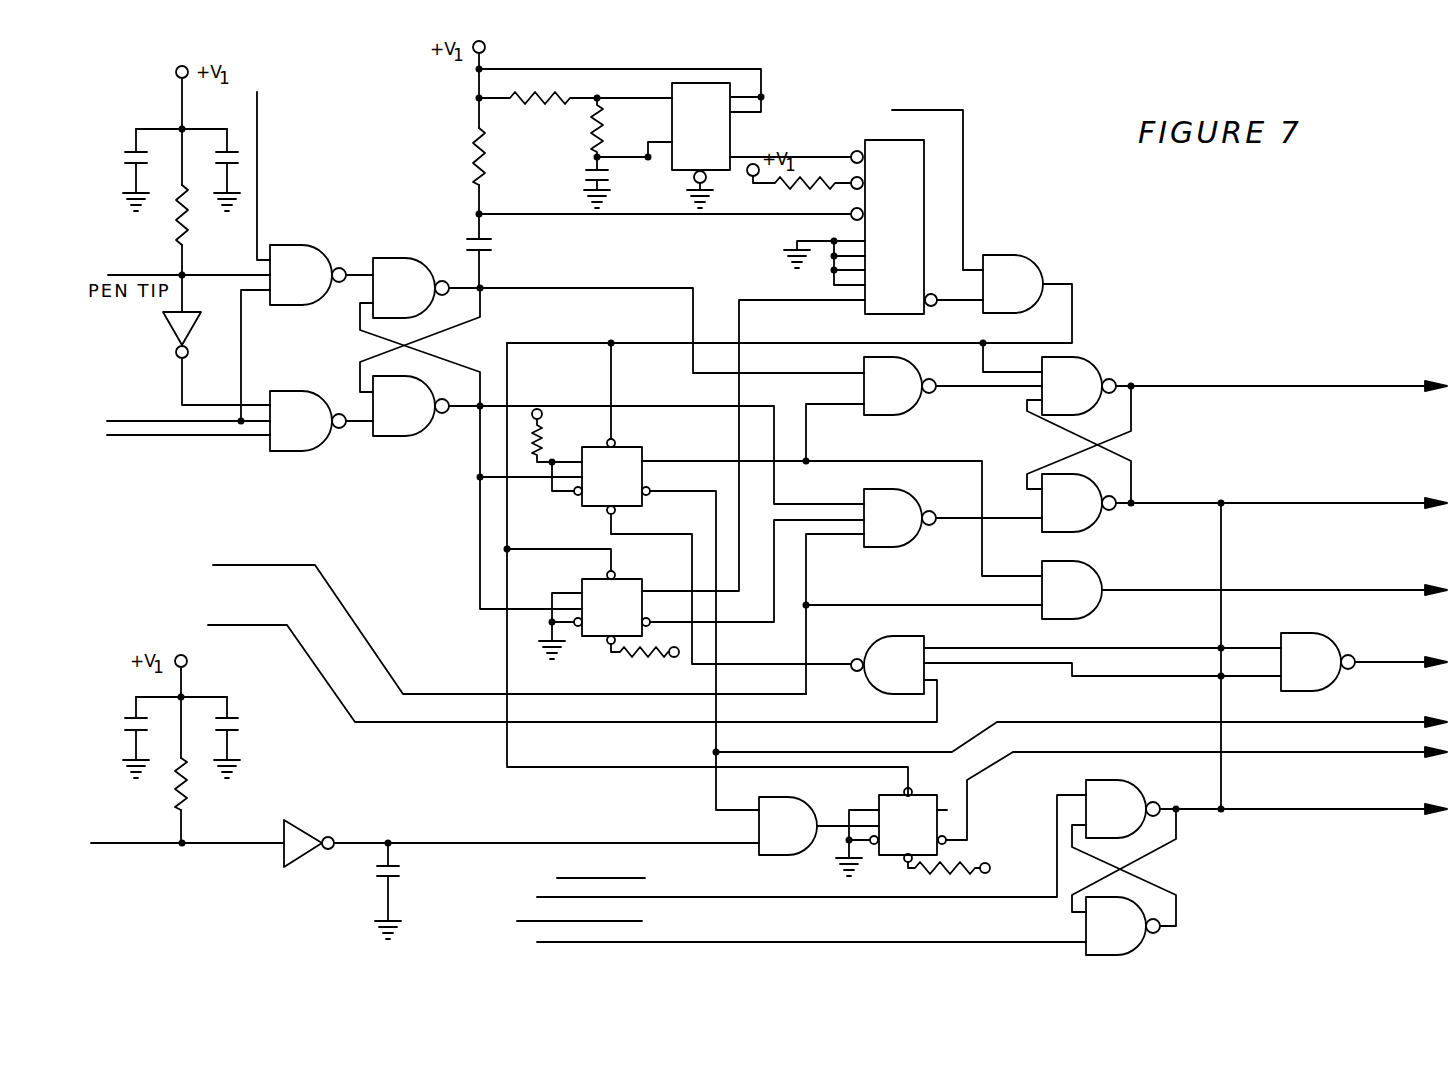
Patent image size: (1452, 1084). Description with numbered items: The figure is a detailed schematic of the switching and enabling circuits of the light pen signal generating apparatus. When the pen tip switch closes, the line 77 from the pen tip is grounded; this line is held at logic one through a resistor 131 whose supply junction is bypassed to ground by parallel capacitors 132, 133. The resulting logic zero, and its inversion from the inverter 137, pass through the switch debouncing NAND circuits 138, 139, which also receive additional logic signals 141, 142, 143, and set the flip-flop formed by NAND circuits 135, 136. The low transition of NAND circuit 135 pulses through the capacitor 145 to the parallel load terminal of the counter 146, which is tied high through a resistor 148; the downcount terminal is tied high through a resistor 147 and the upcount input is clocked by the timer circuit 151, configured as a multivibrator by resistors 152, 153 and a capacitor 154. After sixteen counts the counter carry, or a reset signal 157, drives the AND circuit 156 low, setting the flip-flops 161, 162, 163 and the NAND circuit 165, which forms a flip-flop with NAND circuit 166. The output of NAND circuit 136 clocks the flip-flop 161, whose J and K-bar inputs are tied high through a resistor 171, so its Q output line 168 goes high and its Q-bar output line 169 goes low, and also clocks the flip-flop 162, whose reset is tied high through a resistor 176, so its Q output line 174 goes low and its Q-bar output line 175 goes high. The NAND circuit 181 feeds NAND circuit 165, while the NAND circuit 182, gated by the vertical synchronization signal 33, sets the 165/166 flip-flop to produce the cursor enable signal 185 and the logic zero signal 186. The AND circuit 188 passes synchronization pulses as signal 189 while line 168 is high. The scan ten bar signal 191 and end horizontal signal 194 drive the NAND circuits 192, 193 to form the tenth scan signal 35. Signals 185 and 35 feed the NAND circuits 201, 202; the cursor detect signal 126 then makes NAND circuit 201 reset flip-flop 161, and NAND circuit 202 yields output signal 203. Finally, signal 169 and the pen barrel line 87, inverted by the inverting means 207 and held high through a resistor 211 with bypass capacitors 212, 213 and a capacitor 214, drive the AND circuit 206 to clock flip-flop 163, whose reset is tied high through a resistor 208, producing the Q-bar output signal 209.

The vertical synchronization signal 33 is at (327, 580).
The tenth scan signal 35 is at (1300, 812).
The line from the pen tip 77 is at (122, 273).
The pen barrel line 87 is at (120, 843).
The cursor detect signal 126 is at (300, 648).
The resistor 131 is at (175, 236).
The capacitor 132 is at (134, 146).
The capacitor 133 is at (230, 146).
The NAND circuit 135 is at (412, 300).
The NAND circuit 136 is at (412, 418).
The inverter 137 is at (164, 330).
The switch debouncing NAND circuit 138 is at (309, 287).
The switch debouncing NAND circuit 139 is at (309, 433).
The logic signal 141 is at (159, 441).
The logic signal 142 is at (127, 420).
The logic signal 143 is at (257, 140).
The capacitor 145 is at (496, 245).
The counter 146 is at (874, 142).
The resistor 147 is at (797, 194).
The resistor 148 is at (471, 156).
The timer circuit 151 is at (732, 142).
The resistor 152 is at (530, 112).
The resistor 153 is at (603, 135).
The capacitor 154 is at (586, 180).
The AND circuit 156 is at (1022, 296).
The reset signal 157 is at (963, 140).
The flip-flop 161 is at (629, 488).
The flip-flop 162 is at (629, 618).
The flip-flop 163 is at (925, 836).
The NAND circuit 165 is at (1080, 398).
The NAND circuit 166 is at (1080, 515).
The Q output line 168 is at (680, 461).
The Q-bar output line 169 is at (700, 500).
The resistor 171 is at (545, 448).
The Q output line 174 is at (680, 590).
The Q-bar output line 175 is at (730, 622).
The resistor 176 is at (630, 656).
The NAND circuit 181 is at (902, 398).
The NAND circuit 182 is at (902, 530).
The cursor enable signal 185 is at (1258, 500).
The logic 0 signal 186 is at (1250, 383).
The AND circuit 188 is at (1080, 602).
The vertical synchronization output signal 189 is at (1380, 590).
The scan 10 bar signal 191 is at (700, 898).
The NAND circuit 192 is at (1124, 821).
The NAND circuit 193 is at (1124, 938).
The end horizontal signal 194 is at (702, 942).
The NAND circuit 201 is at (908, 677).
The NAND circuit 202 is at (1319, 674).
The output signal 203 is at (1395, 660).
The AND circuit 206 is at (796, 838).
The inverting means 207 is at (310, 828).
The resistor 208 is at (972, 862).
The Q-bar output signal 209 is at (1280, 752).
The resistor 211 is at (188, 808).
The capacitor 212 is at (123, 724).
The capacitor 213 is at (235, 724).
The capacitor 214 is at (408, 872).